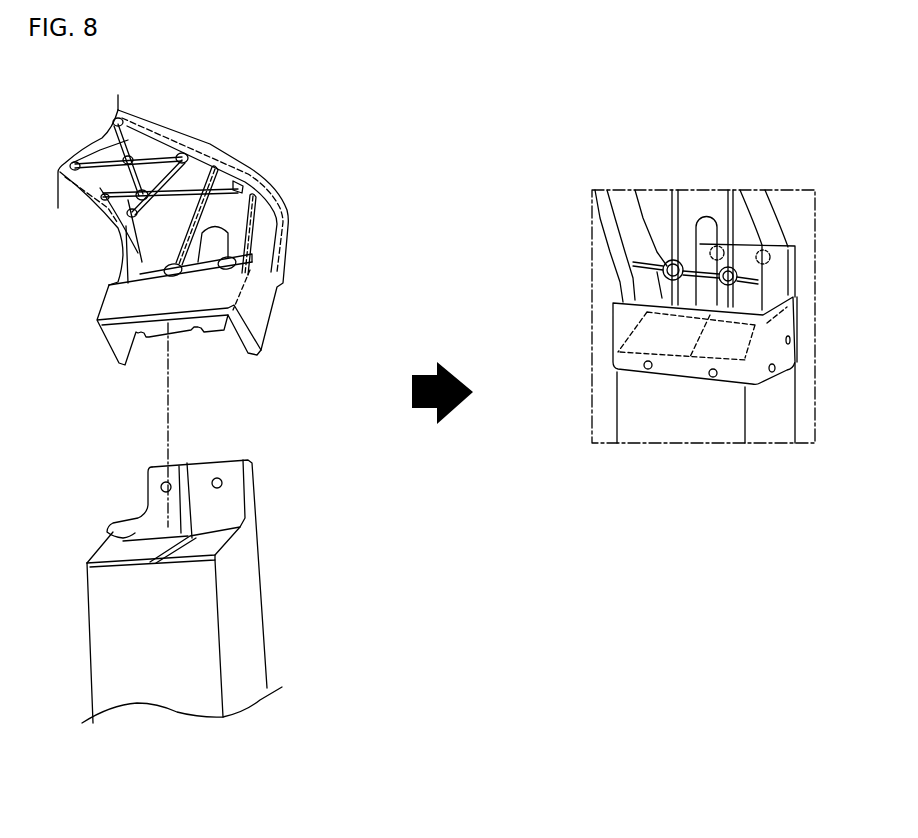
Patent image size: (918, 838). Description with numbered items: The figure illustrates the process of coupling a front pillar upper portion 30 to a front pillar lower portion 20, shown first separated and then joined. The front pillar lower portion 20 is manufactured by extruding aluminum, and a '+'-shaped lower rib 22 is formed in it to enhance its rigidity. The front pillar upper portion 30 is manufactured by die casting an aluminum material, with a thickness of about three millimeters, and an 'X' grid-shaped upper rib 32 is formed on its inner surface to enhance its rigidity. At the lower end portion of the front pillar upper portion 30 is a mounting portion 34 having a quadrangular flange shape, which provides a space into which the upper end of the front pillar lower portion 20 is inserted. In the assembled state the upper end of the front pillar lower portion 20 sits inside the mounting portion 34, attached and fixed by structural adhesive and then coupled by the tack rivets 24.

The front pillar lower portion 20 is at (683, 425).
The lower rib 22 is at (117, 523).
The tack rivets 24 is at (648, 370).
The front pillar upper portion 30 is at (426, 290).
The upper rib 32 is at (180, 200).
The mounting portion 34 is at (117, 275).